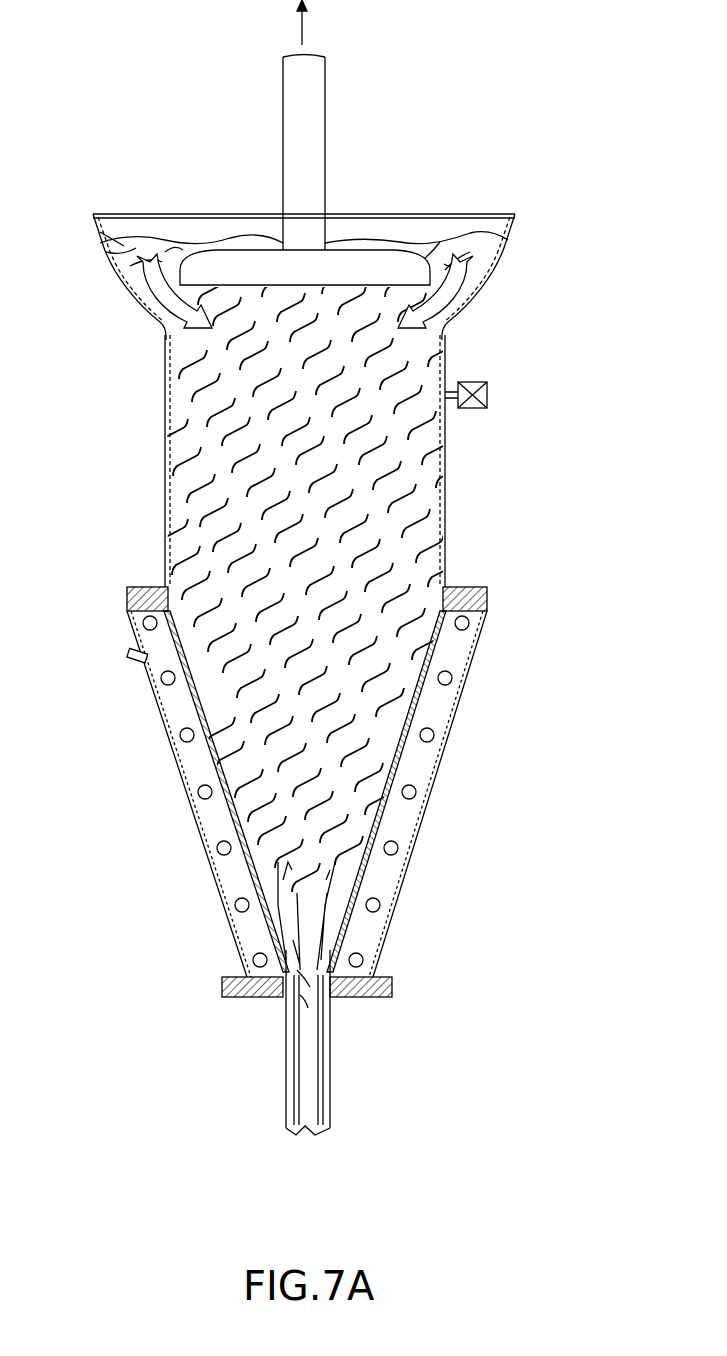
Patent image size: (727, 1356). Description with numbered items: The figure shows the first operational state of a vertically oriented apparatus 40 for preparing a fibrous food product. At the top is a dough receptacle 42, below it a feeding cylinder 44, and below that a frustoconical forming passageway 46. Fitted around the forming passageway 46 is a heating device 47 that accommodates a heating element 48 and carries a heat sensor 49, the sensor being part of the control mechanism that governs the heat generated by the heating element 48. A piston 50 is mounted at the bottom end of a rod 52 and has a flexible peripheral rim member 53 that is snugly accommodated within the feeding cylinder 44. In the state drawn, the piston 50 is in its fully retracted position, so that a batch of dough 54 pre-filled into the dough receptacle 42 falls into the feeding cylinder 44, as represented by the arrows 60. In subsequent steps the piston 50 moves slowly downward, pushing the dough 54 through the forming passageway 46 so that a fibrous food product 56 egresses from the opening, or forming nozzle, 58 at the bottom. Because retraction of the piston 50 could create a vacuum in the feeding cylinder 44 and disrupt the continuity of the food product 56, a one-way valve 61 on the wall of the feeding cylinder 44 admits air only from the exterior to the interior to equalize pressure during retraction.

The apparatus 40 is at (110, 150).
The dough receptacle 42 is at (513, 233).
The feeding cylinder 44 is at (445, 368).
The frustoconical forming passageway 46 is at (385, 662).
The heating device 47 is at (410, 847).
The heating element 48 is at (378, 906).
The heat sensor 49 is at (138, 662).
The piston 50 is at (313, 273).
The rod 52 is at (313, 150).
The flexible peripheral rim member 53 is at (147, 288).
The dough 54 is at (311, 308).
The fibrous food product 56 is at (332, 1077).
The opening (forming nozzle) 58 is at (300, 1012).
The arrows 60 is at (460, 290).
The one-way valve 61 is at (488, 392).